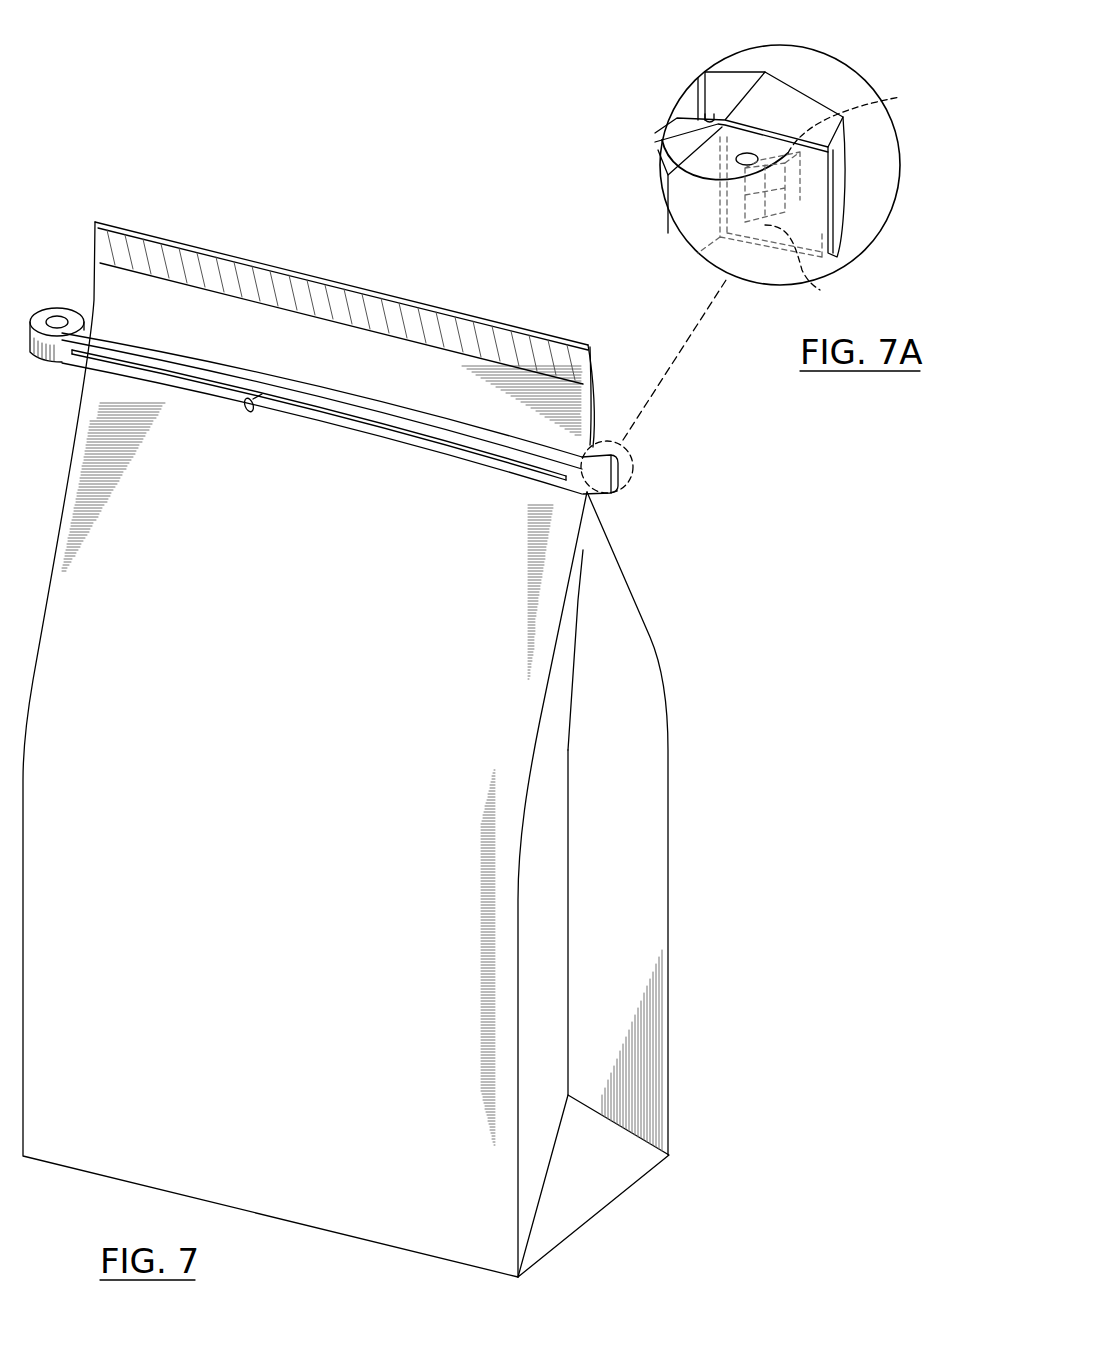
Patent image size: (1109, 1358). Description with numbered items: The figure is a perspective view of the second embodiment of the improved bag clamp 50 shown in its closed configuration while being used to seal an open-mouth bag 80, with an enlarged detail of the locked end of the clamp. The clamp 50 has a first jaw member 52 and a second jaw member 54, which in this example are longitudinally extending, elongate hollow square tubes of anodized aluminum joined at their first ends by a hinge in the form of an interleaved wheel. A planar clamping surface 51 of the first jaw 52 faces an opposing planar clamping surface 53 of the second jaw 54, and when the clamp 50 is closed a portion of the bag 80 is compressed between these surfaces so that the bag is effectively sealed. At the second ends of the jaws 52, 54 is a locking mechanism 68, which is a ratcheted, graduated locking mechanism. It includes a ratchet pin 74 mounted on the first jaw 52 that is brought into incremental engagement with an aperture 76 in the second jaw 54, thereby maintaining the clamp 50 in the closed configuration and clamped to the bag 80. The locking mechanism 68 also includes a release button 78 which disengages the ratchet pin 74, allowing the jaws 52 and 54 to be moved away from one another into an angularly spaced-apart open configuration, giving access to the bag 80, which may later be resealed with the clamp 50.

In FIG. 7, the bag clamp 50 is at (50, 242).
In FIG. 7A, the clamping surface 51 is at (707, 114).
In FIG. 7, the first jaw member 52 is at (592, 443).
In FIG. 7A, the first jaw member 52 is at (722, 73).
In FIG. 7A, the clamping surface 53 is at (718, 120).
In FIG. 7, the second jaw member 54 is at (572, 485).
In FIG. 7A, the second jaw member 54 is at (663, 163).
In FIG. 7, the locking mechanism 68 is at (652, 478).
In FIG. 7A, the ratchet pin 74 is at (863, 116).
In FIG. 7A, the aperture 76 is at (783, 223).
In FIG. 7A, the release button 78 is at (738, 158).
In FIG. 7, the open-mouth bag 80 is at (670, 877).